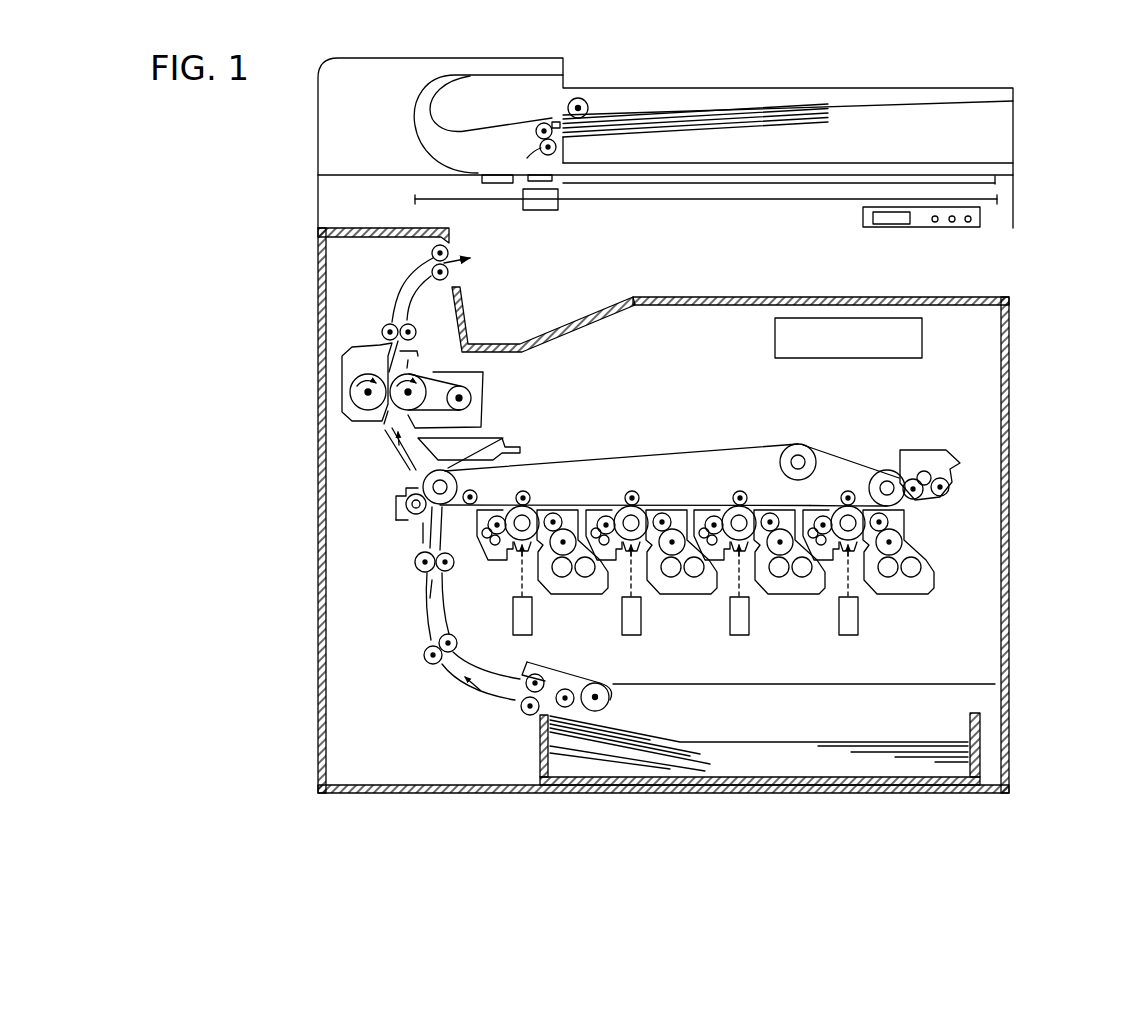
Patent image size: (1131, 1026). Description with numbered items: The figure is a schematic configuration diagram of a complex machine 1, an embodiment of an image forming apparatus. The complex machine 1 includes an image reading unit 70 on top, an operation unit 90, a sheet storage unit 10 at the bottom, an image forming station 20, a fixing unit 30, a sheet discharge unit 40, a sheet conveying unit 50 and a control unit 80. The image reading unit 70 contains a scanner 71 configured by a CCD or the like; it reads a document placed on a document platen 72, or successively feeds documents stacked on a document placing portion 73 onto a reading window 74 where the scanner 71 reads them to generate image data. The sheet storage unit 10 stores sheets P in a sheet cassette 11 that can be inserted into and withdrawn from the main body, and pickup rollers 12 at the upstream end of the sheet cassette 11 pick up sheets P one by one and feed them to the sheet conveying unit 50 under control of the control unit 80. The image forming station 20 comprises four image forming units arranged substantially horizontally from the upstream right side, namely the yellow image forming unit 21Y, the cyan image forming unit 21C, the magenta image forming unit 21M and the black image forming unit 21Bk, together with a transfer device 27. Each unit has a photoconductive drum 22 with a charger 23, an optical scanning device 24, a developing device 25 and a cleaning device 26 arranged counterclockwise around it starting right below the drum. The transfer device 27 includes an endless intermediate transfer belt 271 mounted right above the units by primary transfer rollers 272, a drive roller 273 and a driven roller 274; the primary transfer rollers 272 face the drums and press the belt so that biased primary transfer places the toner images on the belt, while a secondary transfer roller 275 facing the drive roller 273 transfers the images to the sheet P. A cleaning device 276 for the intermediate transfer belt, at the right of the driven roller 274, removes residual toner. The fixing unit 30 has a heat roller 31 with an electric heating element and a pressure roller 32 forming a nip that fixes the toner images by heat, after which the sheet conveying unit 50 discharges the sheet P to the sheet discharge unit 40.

The complex machine 1 is at (1035, 270).
The sheet storage unit 10 is at (798, 755).
The sheet cassette 11 is at (655, 780).
The pickup rollers 12 is at (566, 708).
The image forming station 20 is at (925, 422).
The black image forming unit 21Bk is at (537, 495).
The magenta image forming unit 21M is at (651, 483).
The cyan image forming unit 21C is at (759, 483).
The yellow image forming unit 21Y is at (886, 499).
The photoconductive drum 22 is at (863, 504).
The charger 23 is at (517, 550).
The optical scanning device 24 is at (532, 620).
The developing device 25 is at (918, 552).
The cleaning device 26 is at (812, 504).
The transfer device 27 is at (537, 445).
The intermediate transfer belt 271 is at (625, 457).
The primary transfer rollers 272 is at (518, 494).
The drive roller 273 is at (502, 438).
The driven roller 274 is at (887, 482).
The secondary transfer roller 275 is at (406, 505).
The cleaning device for the intermediate transfer belt 276 is at (928, 453).
The fixing unit 30 is at (376, 381).
The heat roller 31 is at (388, 432).
The pressure roller 32 is at (358, 396).
The sheet discharge unit 40 is at (562, 305).
The sheet conveying unit 50 is at (420, 620).
The image reading unit 70 is at (1020, 129).
The scanner 71 is at (558, 205).
The document platen 72 is at (730, 184).
The document placing portion 73 is at (874, 110).
The reading window 74 is at (490, 184).
The control unit 80 is at (922, 338).
The operation unit 90 is at (987, 218).
The sheet P is at (730, 755).